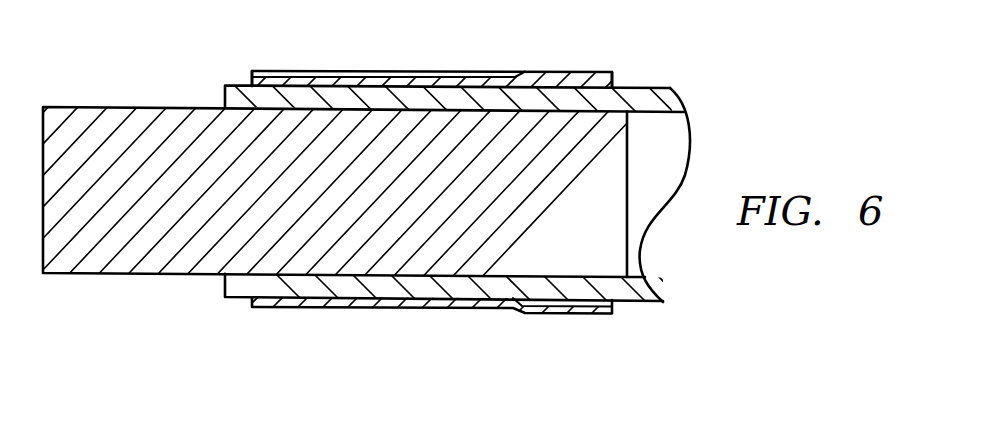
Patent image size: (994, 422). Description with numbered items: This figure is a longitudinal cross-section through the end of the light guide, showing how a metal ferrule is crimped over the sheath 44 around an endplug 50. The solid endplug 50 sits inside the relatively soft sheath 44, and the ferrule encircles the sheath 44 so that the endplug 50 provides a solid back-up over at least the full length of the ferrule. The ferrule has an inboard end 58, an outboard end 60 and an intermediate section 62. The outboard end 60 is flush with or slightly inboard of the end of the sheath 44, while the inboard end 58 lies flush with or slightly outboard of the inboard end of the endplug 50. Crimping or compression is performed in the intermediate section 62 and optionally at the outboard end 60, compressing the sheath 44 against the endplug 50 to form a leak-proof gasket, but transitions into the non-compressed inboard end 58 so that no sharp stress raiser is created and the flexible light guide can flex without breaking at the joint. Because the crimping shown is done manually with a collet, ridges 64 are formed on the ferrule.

The sheath 44 is at (224, 100).
The endplug 50 is at (176, 275).
The inboard end 58 is at (614, 83).
The outboard end 60 is at (250, 82).
The intermediate section 62 is at (414, 75).
The ridges 64 is at (335, 70).